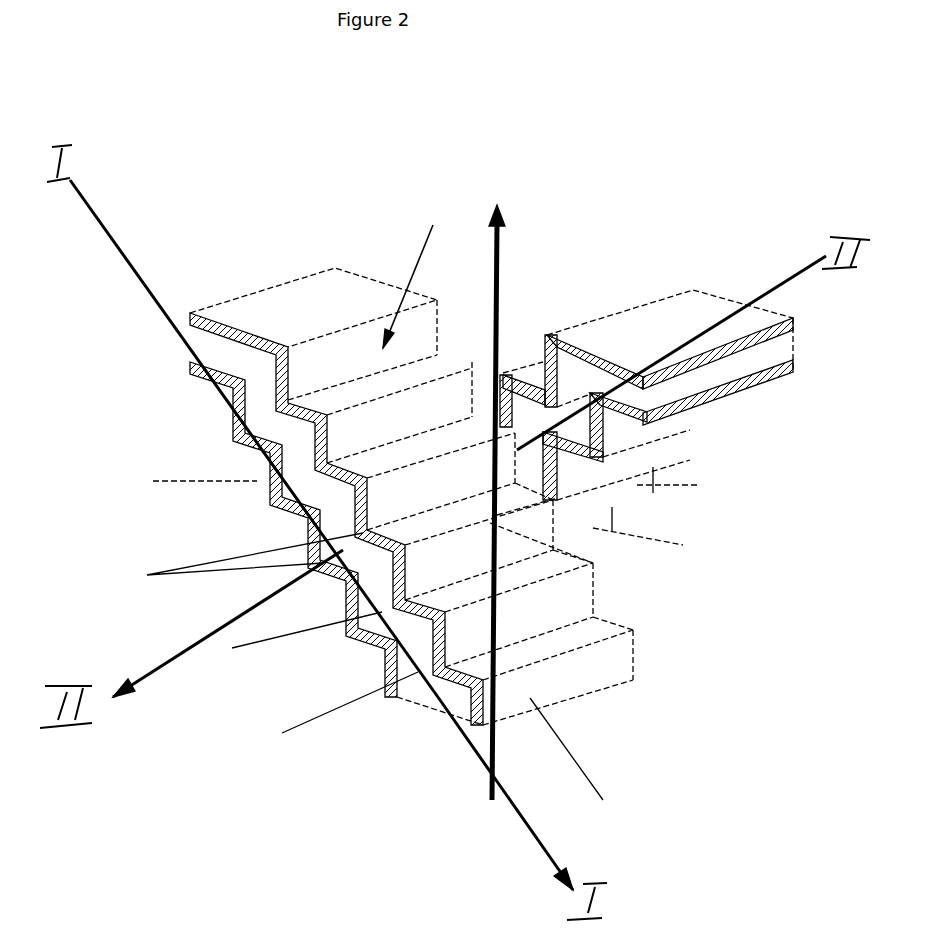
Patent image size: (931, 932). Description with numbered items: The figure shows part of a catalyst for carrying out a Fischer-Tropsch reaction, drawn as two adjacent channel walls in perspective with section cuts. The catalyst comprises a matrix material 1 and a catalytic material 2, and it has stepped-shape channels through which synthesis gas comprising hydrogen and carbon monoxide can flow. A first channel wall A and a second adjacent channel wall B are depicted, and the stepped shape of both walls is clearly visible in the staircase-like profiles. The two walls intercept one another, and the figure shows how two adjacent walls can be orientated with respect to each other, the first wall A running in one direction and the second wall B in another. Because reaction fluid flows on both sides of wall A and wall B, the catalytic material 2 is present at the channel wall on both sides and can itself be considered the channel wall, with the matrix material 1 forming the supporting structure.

The matrix material 1 is at (50, 336).
The catalytic material 2 is at (64, 381).
The first channel wall A is at (260, 148).
The second channel wall B is at (701, 163).